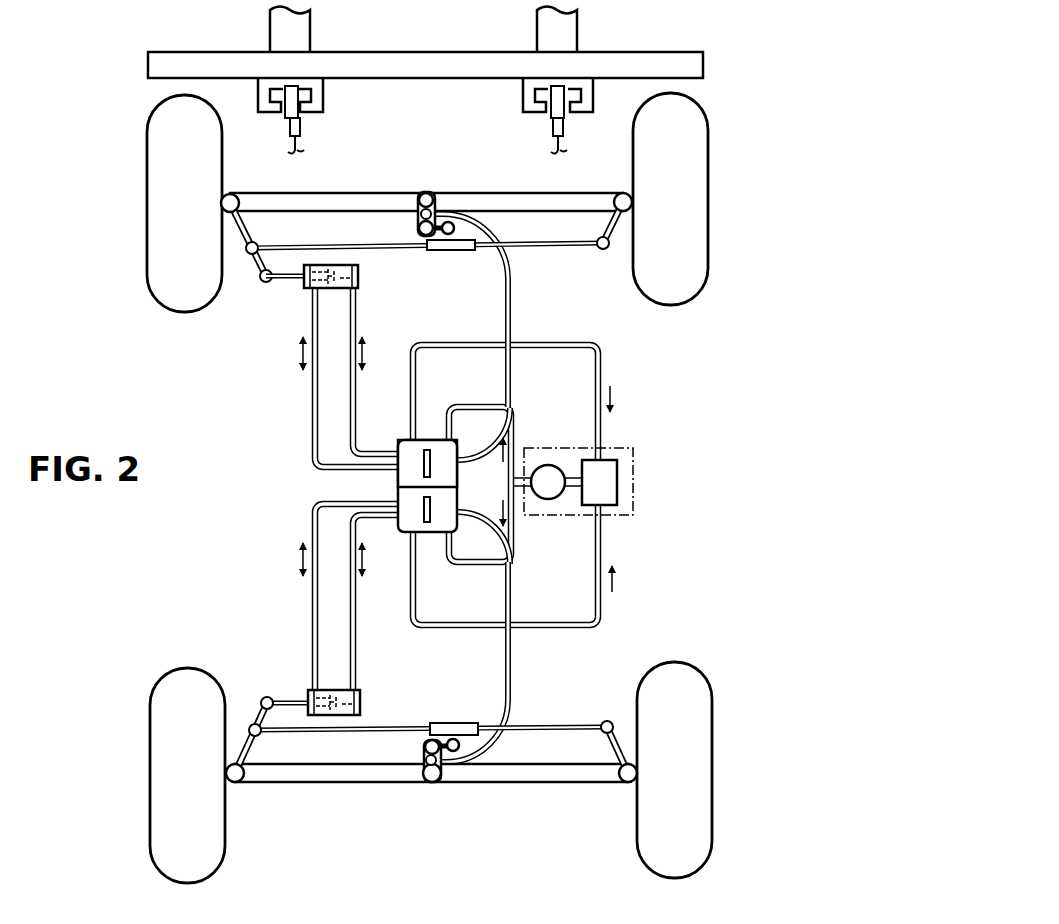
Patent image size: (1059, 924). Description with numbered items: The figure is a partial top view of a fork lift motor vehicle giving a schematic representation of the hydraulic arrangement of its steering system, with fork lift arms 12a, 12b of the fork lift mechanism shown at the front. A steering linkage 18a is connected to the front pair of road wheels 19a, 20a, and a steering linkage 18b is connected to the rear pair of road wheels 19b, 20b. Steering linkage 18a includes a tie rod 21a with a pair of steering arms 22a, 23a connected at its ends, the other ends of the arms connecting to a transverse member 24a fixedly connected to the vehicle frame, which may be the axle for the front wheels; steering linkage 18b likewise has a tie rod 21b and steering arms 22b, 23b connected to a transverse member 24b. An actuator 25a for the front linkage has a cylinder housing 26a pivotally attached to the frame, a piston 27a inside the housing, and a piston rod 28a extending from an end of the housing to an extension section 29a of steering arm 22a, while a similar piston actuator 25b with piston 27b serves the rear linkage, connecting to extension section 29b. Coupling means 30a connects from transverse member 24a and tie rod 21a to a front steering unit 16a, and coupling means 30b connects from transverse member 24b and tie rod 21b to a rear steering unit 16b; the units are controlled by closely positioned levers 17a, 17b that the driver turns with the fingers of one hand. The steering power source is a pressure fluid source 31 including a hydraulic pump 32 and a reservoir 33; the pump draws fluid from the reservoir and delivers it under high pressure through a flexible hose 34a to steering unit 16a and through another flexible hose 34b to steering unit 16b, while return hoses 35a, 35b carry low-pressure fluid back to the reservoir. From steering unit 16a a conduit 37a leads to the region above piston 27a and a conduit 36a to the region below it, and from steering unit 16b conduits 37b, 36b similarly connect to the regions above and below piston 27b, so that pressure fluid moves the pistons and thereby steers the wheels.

The fork lift arm 12a is at (308, 38).
The fork lift arm 12b is at (568, 36).
The front steering unit 16a is at (401, 448).
The rear steering unit 16b is at (406, 524).
The lever 17a is at (428, 446).
The lever 17b is at (430, 536).
The steering linkage 18a is at (455, 437).
The steering linkage 18b is at (449, 726).
The road wheel 19a is at (148, 218).
The road wheel 19b is at (150, 790).
The road wheel 20a is at (708, 188).
The road wheel 20b is at (712, 756).
The tie rod 21a is at (558, 249).
The tie rod 21b is at (560, 726).
The steering arm 22a is at (249, 226).
The steering arm 22b is at (251, 754).
The steering arm 23a is at (601, 218).
The steering arm 23b is at (610, 745).
The transverse member 24a is at (352, 194).
The transverse member 24b is at (501, 789).
The actuator 25a is at (357, 269).
The piston actuator 25b is at (357, 727).
The cylinder housing 26a is at (358, 282).
The piston 27a is at (358, 292).
The piston 27b is at (362, 702).
The piston rod 28a is at (292, 279).
The extension section 29a is at (258, 268).
The link 29b is at (257, 711).
The coupling means 30a is at (494, 262).
The coupling means 30b is at (502, 659).
The pressure fluid source 31 is at (608, 470).
The hydraulic pump 32 is at (553, 466).
The reservoir 33 is at (617, 496).
The flexible hose 34a is at (473, 404).
The flexible hose 34b is at (490, 570).
The return hose 35a is at (603, 372).
The return hose 35b is at (603, 548).
The conduit 36a is at (312, 400).
The conduit 36b is at (312, 605).
The conduit 37a is at (353, 426).
The conduit 37b is at (353, 632).